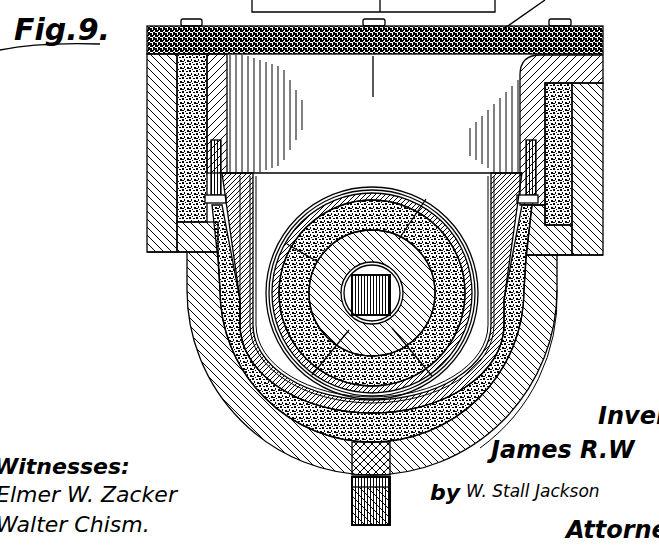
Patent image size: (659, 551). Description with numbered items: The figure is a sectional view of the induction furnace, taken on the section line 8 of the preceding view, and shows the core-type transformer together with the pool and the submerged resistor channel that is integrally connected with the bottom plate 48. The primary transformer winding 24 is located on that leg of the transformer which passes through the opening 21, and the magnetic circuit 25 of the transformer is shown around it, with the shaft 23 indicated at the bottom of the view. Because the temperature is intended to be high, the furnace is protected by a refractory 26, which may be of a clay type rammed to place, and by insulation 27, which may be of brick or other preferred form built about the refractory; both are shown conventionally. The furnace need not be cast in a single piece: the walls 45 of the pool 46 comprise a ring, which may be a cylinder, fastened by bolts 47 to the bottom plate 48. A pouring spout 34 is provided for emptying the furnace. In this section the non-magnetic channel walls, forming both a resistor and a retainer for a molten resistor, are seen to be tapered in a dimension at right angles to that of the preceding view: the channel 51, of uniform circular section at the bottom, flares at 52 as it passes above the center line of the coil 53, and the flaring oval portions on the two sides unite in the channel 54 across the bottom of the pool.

The section line 8 is at (372, 67).
The opening 21 is at (405, 253).
The shaft 23 is at (388, 519).
The primary transformer winding 24 is at (308, 258).
The magnetic circuit 25 is at (353, 499).
The refractory 26 is at (195, 88).
The insulation 27 is at (158, 119).
The pouring spout 34 is at (600, 50).
The walls of the pool 45 is at (150, 144).
The pool 46 is at (372, 259).
The bolts 47 is at (226, 192).
The bottom plate 48 is at (218, 210).
The channel 51 is at (318, 433).
The flaring portion 52 is at (232, 333).
The coil 53 is at (510, 403).
The channel across the bottom of the pool 54 is at (372, 183).